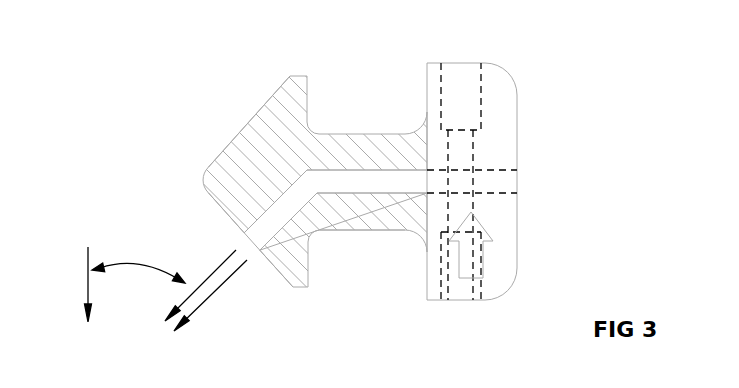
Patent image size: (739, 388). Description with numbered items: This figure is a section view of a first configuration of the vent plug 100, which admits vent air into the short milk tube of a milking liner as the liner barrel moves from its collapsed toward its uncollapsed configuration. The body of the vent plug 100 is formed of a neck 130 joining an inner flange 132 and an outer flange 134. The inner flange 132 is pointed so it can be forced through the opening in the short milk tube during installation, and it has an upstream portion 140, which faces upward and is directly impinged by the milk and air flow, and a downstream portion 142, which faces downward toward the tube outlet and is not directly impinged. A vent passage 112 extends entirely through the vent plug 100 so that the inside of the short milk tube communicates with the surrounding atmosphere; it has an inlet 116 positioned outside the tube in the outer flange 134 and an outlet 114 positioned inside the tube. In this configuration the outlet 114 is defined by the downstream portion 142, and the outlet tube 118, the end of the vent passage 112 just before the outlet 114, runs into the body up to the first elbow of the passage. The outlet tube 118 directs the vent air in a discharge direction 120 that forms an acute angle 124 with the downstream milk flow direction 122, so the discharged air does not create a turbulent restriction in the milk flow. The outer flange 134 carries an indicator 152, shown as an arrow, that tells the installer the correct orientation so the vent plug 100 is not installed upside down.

The vent plug 100 is at (326, 190).
The vent passage 112 is at (363, 188).
The outlet 114 is at (250, 233).
The inlet 116 is at (456, 63).
The outlet tube 118 is at (257, 247).
The discharge direction 120 is at (203, 295).
The milk flow direction 122 is at (88, 268).
The acute angle 124 is at (138, 267).
The neck 130 is at (356, 220).
The inner flange 132 is at (243, 128).
The outer flange 134 is at (510, 248).
The upstream portion 140 is at (218, 163).
The downstream portion 142 is at (210, 206).
The indicator 152 is at (473, 272).